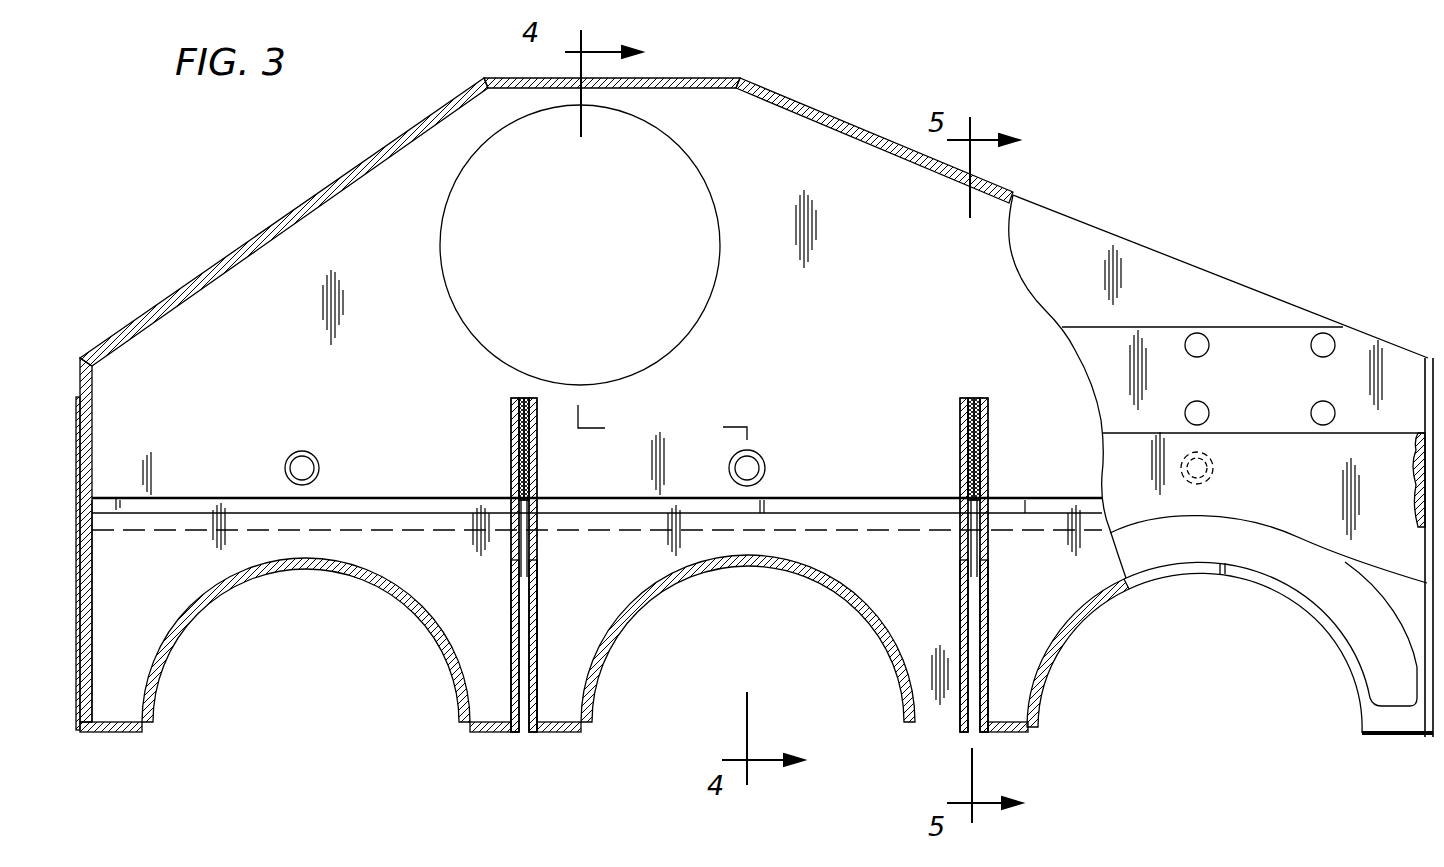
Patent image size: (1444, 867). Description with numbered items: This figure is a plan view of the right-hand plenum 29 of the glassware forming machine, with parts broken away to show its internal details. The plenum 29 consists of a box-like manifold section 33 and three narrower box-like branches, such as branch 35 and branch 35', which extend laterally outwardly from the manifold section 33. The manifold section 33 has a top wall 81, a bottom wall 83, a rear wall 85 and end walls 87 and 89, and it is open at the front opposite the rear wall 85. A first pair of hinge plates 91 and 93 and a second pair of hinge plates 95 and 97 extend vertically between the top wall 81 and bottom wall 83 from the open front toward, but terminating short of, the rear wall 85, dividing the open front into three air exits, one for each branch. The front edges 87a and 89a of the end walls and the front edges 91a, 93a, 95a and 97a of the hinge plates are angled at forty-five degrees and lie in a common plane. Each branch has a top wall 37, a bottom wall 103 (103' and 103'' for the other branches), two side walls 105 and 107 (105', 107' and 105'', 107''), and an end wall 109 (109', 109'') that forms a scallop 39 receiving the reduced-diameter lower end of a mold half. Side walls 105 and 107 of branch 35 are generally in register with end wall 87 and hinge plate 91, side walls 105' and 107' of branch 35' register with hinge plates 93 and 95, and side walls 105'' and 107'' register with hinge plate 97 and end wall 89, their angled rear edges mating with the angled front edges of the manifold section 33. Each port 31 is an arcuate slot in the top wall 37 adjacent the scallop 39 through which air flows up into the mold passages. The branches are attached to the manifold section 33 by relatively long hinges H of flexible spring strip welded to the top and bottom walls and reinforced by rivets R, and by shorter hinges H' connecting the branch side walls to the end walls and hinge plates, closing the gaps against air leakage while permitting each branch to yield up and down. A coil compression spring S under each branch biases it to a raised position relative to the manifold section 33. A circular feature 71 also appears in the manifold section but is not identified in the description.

The plenum 29 is at (1182, 255).
The port 31 is at (1208, 512).
The manifold section 33 is at (293, 207).
The branch 35 is at (521, 599).
The branch 35' is at (926, 587).
The top wall 37 is at (1376, 566).
The scallop 39 is at (240, 576).
The circular opening 71 is at (668, 135).
The top wall 81 is at (1055, 232).
The bottom wall 83 is at (826, 168).
The rear wall 85 is at (722, 78).
The end wall 87 is at (78, 368).
The front edge 87a is at (92, 448).
The end wall 89 is at (1432, 424).
The front edge 89a is at (1418, 445).
The hinge plate 91 is at (511, 410).
The front edge 91a is at (511, 450).
The hinge plate 93 is at (537, 420).
The front edge 93a is at (537, 450).
The hinge plate 95 is at (960, 410).
The front edge 95a is at (960, 448).
The hinge plate 97 is at (988, 412).
The front edge 97a is at (988, 448).
The bottom wall 103 is at (157, 611).
The bottom wall 103' is at (624, 632).
The bottom wall 103'' is at (1069, 641).
The side wall 105 is at (116, 748).
The side wall 105' is at (574, 646).
The side wall 105'' is at (1029, 646).
The side wall 107 is at (479, 646).
The side wall 107' is at (930, 646).
The side wall 107'' is at (1359, 703).
The end wall 109 is at (443, 748).
The end wall 109' is at (600, 748).
The end wall 109'' is at (1058, 748).
The hinge H is at (1202, 307).
The hinge H' is at (761, 430).
The rivet R is at (1312, 404).
The coil compression spring S is at (315, 455).